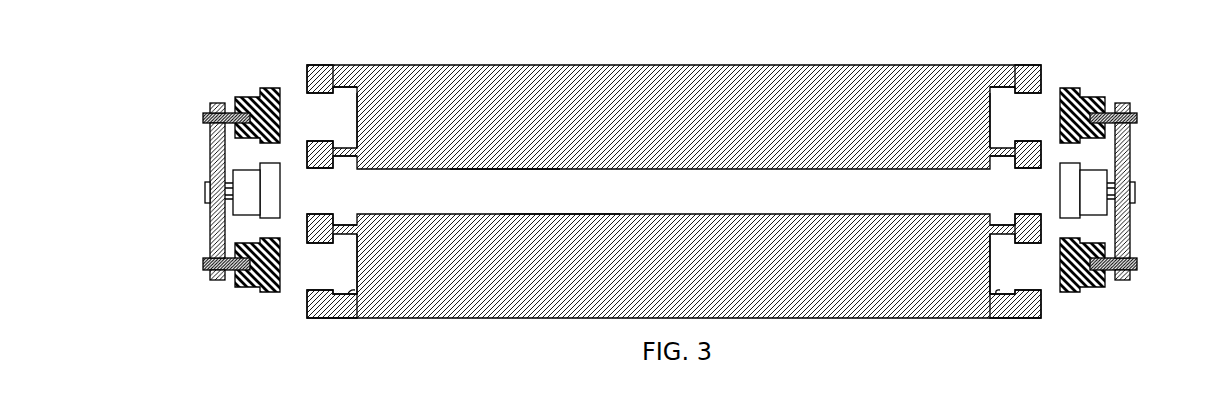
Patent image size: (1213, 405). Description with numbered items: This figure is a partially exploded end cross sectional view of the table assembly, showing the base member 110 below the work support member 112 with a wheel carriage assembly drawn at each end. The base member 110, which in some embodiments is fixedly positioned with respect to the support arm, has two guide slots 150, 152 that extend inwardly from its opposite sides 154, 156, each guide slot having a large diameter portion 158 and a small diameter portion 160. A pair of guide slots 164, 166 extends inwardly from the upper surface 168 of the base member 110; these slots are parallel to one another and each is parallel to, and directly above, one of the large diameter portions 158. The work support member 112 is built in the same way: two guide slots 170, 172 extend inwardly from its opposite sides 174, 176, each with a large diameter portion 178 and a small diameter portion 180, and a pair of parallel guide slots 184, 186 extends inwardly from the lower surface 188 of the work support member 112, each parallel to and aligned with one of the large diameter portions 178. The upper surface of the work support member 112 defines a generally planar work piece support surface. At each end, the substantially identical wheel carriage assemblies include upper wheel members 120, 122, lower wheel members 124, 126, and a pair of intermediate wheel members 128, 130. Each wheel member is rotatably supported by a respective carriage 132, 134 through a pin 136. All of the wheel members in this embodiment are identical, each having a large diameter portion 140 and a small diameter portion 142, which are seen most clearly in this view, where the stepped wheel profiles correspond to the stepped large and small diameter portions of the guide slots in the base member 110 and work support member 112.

The base member 110 is at (528, 320).
The work support member 112 is at (563, 65).
The upper wheel member 120 is at (232, 97).
The upper wheel member 122 is at (1108, 97).
The lower wheel member 124 is at (232, 257).
The lower wheel member 126 is at (1107, 258).
The intermediate wheel member 128 is at (233, 174).
The intermediate wheel member 130 is at (1107, 173).
The carriage 132 is at (212, 280).
The carriage 134 is at (1125, 281).
The pin 136 is at (203, 118).
The large diameter portion 140 is at (268, 88).
The small diameter portion 142 is at (245, 96).
The guide slot 150 is at (360, 267).
The guide slot 152 is at (988, 270).
The side of base member 154 is at (307, 241).
The side of base member 156 is at (1041, 241).
The large diameter portion 158 is at (350, 294).
The small diameter portion 160 is at (323, 290).
The guide slot 164 is at (357, 223).
The guide slot 166 is at (996, 224).
The upper surface 168 is at (557, 214).
The guide slot 170 is at (358, 118).
The guide slot 172 is at (990, 118).
The side of work support member 174 is at (307, 144).
The side of work support member 176 is at (1041, 146).
The large diameter portion 178 is at (350, 96).
The small diameter portion 180 is at (318, 96).
The guide slot 184 is at (338, 158).
The guide slot 186 is at (1008, 158).
The lower surface 188 is at (487, 170).